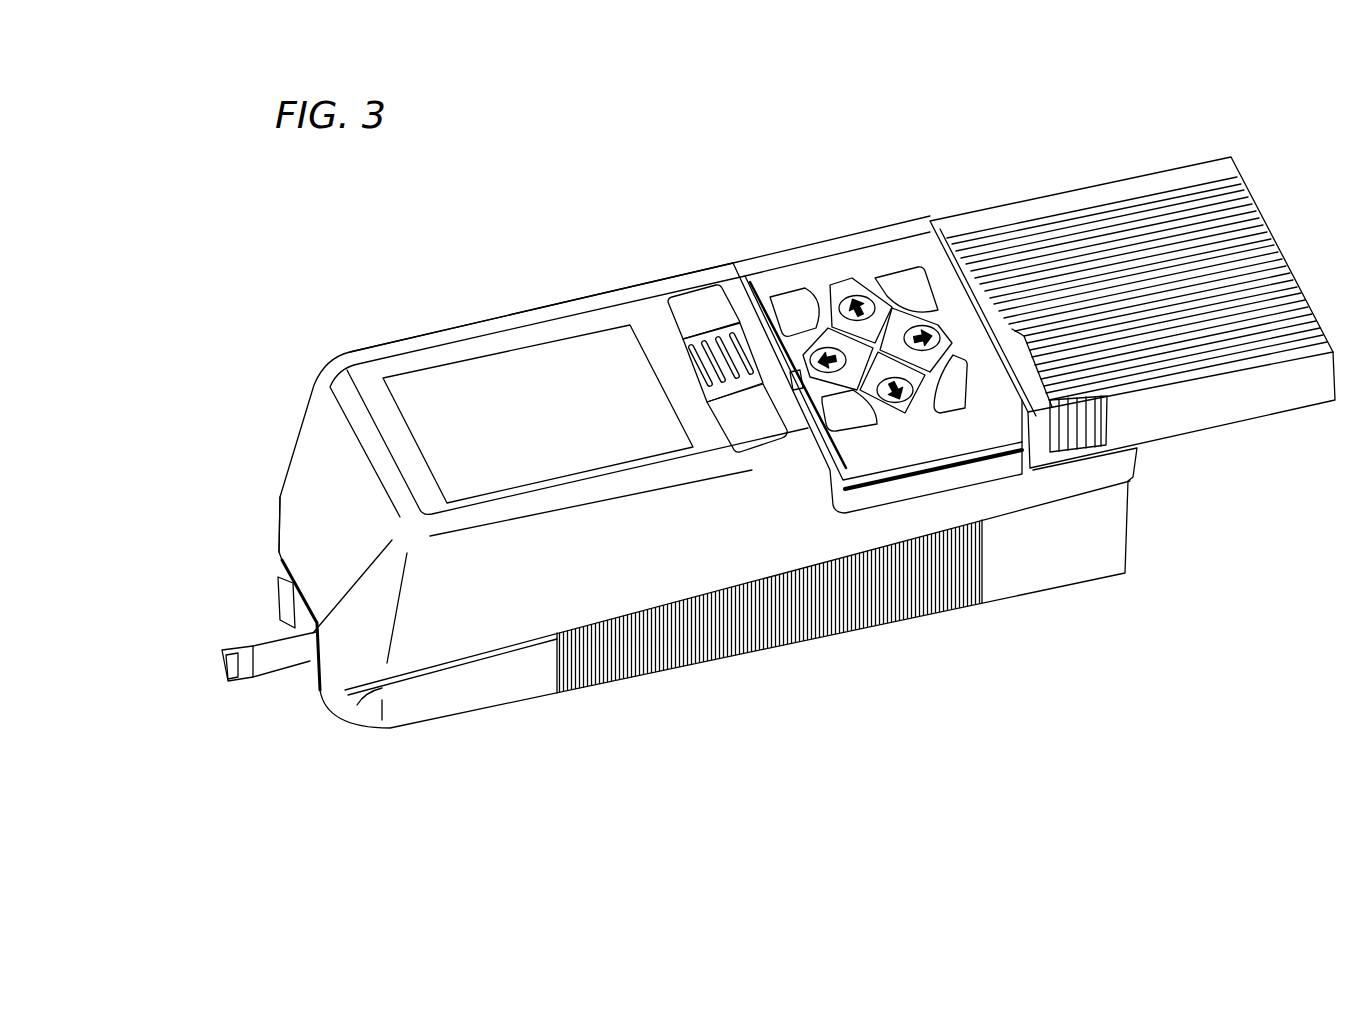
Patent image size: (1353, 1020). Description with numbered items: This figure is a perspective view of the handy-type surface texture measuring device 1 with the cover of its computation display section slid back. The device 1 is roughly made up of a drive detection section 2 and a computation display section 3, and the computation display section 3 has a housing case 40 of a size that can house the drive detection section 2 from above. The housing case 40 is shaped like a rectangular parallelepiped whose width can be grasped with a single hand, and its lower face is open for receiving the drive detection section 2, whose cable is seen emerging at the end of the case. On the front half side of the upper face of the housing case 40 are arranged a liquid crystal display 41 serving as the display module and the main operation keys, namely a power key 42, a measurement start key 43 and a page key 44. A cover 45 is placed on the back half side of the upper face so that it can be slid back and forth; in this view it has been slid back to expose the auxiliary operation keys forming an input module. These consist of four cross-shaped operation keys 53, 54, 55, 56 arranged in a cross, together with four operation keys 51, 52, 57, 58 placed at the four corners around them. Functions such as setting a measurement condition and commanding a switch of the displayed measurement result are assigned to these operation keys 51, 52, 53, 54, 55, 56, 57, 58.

The surface texture measuring device 1 is at (474, 246).
The drive detection section 2 is at (273, 655).
The computation display section 3 is at (303, 457).
The housing case 40 is at (393, 348).
The liquid crystal display 41 is at (541, 360).
The power key 42 is at (750, 428).
The measurement start key 43 is at (733, 366).
The page key 44 is at (702, 300).
The cover 45 is at (1057, 192).
The operation key 51 is at (850, 430).
The operation key 52 is at (787, 302).
The cross-shaped operation key 53 is at (818, 283).
The cross-shaped operation key 54 is at (902, 416).
The cross-shaped operation key 55 is at (843, 288).
The cross-shaped operation key 56 is at (895, 313).
The operation key 57 is at (962, 400).
The operation key 58 is at (898, 277).